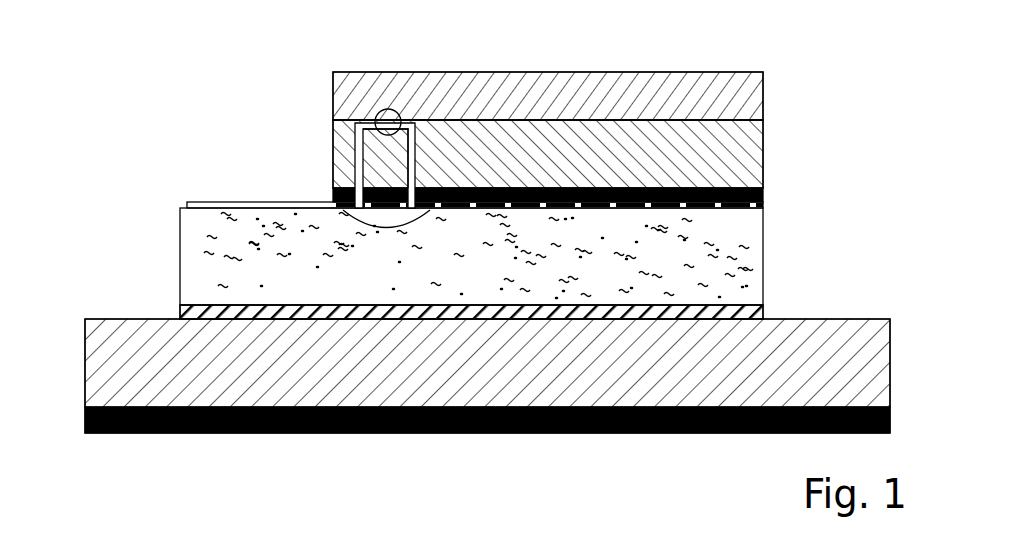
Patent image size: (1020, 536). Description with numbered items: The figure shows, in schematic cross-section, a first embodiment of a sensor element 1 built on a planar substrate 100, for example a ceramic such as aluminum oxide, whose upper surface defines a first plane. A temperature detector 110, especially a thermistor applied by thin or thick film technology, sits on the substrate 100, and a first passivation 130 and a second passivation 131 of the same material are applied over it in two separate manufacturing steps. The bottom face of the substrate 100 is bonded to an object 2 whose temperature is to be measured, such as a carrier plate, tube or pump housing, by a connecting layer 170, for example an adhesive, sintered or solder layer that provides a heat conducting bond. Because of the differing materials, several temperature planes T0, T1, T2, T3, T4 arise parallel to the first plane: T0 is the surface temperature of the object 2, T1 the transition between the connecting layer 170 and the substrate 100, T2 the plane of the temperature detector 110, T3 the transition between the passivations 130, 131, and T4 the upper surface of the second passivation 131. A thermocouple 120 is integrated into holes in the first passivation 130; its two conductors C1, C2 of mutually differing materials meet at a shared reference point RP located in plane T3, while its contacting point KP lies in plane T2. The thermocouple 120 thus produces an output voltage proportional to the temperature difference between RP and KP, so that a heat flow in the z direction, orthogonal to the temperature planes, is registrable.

The sensor element 1 is at (148, 177).
The object 2 is at (663, 398).
The substrate 100 is at (748, 262).
The temperature detector 110 is at (764, 195).
The thermocouple 120 is at (337, 175).
The first passivation 130 is at (764, 165).
The second passivation 131 is at (764, 102).
The connecting layer 170 is at (757, 311).
The conductor pair C1 is at (340, 143).
The conductor pair C2 is at (407, 185).
The reference point RP is at (388, 109).
The contacting point KP is at (386, 227).
The temperature plane T0 is at (83, 320).
The temperature plane T1 is at (165, 301).
The temperature plane T2 is at (165, 205).
The temperature plane T3 is at (327, 120).
The temperature plane T4 is at (327, 72).
The z direction z is at (902, 85).